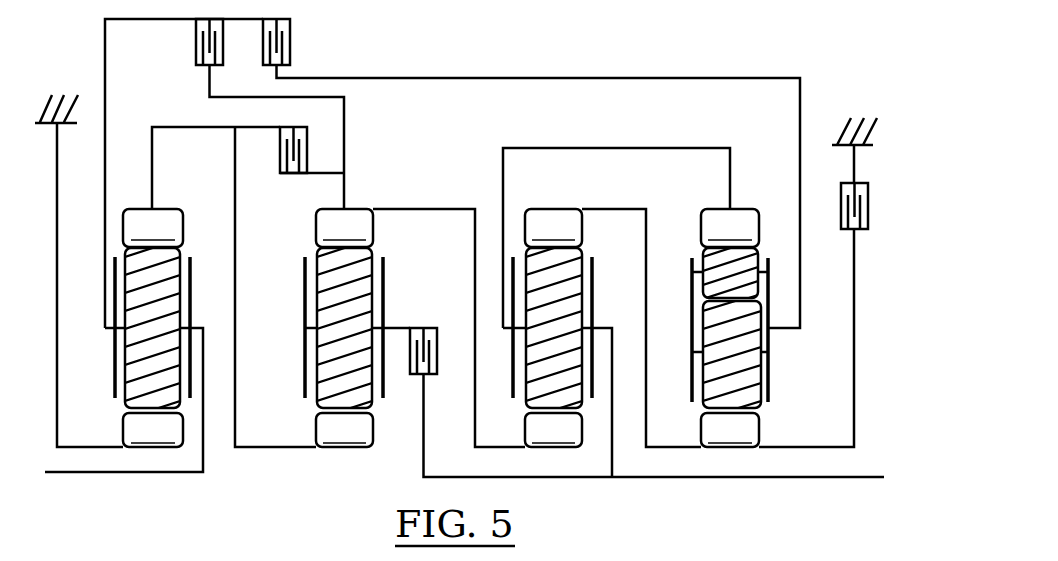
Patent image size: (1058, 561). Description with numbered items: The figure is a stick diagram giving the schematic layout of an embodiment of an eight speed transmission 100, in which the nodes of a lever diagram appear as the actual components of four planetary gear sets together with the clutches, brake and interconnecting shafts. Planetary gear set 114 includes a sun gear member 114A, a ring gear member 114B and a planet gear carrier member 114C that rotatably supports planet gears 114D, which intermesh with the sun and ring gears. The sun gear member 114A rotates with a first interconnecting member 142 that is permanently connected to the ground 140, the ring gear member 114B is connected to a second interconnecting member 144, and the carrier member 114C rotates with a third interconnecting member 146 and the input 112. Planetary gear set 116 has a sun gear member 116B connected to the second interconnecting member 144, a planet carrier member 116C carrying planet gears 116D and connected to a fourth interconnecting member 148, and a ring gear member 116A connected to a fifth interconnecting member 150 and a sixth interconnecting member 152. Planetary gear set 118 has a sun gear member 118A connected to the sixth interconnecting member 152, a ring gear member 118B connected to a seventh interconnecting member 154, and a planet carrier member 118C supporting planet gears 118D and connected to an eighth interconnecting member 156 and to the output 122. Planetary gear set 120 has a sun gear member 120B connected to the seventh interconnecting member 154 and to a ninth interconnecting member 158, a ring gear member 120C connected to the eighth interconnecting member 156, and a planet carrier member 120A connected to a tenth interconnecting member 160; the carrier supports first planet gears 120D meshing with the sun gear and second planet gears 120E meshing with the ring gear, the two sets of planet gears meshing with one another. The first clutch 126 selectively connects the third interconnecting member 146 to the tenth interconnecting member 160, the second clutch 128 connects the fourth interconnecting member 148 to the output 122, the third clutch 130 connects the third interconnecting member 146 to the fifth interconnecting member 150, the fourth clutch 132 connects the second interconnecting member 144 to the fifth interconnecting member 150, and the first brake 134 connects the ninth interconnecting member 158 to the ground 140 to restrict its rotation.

The eight speed transmission 100 is at (751, 53).
The input 112 is at (98, 474).
The planetary gear set 114 is at (144, 349).
The sun gear member 114A is at (153, 430).
The ring gear member 114B is at (153, 228).
The planet gear carrier member 114C is at (115, 346).
The planet gears 114D is at (183, 250).
The planetary gear set 116 is at (316, 361).
The ring gear member 116A is at (344, 228).
The sun gear member 116B is at (344, 430).
The planet carrier member 116C is at (305, 268).
The planet gears 116D is at (316, 408).
The planetary gear set 118 is at (580, 373).
The sun gear member 118A is at (553, 430).
The ring gear member 118B is at (553, 228).
The planet carrier member 118C is at (592, 318).
The planet gears 118D is at (582, 258).
The planetary gear set 120 is at (742, 360).
The planet carrier member 120A is at (770, 356).
The sun gear member 120B is at (730, 430).
The ring gear member 120C is at (730, 228).
The first planet gears 120D is at (762, 404).
The second planet gears 120E is at (703, 252).
The output 122 is at (835, 478).
The first clutch 126 is at (290, 48).
The second clutch 128 is at (438, 355).
The third clutch 130 is at (196, 31).
The fourth clutch 132 is at (285, 174).
The first brake 134 is at (841, 218).
The ground 140 is at (68, 125).
The first shaft or interconnecting member 142 is at (58, 250).
The second shaft or interconnecting member 144 is at (165, 126).
The third shaft or interconnecting member 146 is at (105, 45).
The fourth shaft or interconnecting member 148 is at (410, 328).
The fifth shaft or interconnecting member 150 is at (344, 146).
The sixth shaft or interconnecting member 152 is at (405, 209).
The seventh shaft or interconnecting member 154 is at (647, 294).
The eighth shaft or interconnecting member 156 is at (565, 148).
The ninth shaft or interconnecting member 158 is at (855, 362).
The tenth shaft or interconnecting member 160 is at (489, 78).